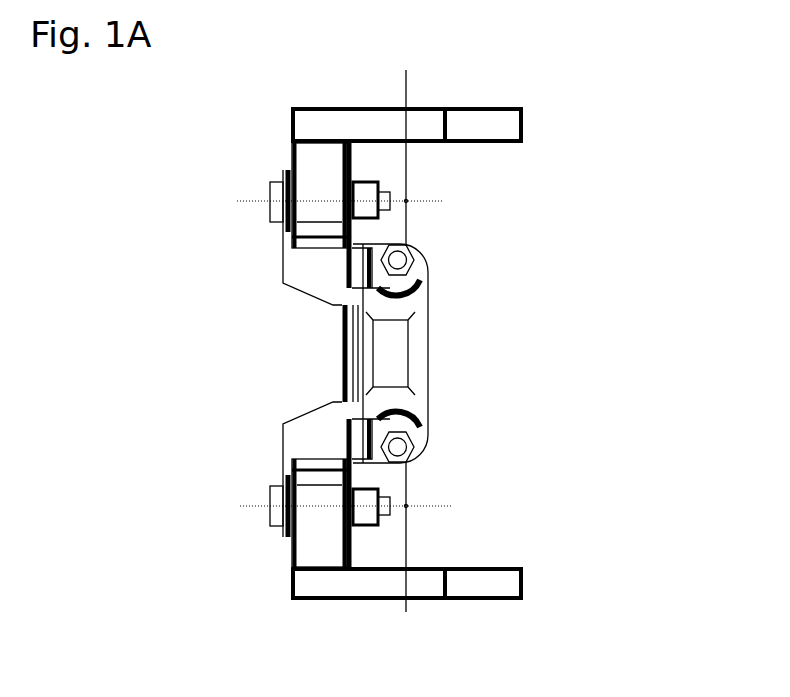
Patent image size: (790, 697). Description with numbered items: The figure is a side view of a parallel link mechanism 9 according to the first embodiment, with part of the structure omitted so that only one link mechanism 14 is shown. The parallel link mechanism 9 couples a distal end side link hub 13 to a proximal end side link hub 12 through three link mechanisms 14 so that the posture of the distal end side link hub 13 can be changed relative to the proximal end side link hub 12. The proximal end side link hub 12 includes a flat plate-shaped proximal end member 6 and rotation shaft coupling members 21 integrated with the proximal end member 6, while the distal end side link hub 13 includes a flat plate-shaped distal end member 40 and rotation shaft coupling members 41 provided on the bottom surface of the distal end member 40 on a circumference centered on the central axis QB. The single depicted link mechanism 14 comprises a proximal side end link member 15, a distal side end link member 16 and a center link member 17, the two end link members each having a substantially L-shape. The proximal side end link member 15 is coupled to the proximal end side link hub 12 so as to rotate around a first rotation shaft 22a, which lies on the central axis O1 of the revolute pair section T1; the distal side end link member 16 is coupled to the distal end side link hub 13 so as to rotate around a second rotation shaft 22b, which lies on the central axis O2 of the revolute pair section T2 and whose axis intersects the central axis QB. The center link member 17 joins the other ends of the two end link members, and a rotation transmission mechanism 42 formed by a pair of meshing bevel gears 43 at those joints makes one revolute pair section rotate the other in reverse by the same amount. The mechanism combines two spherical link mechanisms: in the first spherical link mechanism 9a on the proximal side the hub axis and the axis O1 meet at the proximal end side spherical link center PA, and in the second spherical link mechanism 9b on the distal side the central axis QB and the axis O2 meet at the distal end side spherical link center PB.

The parallel link mechanism 9 is at (520, 90).
The first spherical link mechanism 9a is at (508, 452).
The second spherical link mechanism 9b is at (505, 271).
The central axis of the distal end side link hub QB is at (407, 92).
The distal end side spherical link center PB is at (420, 198).
The proximal end side spherical link center PA is at (420, 510).
The central axis of the second rotation shaft O2 is at (407, 203).
The central axis of the first rotation shaft O1 is at (407, 503).
The distal end side link hub 13 is at (259, 136).
The rotation shaft coupling member 41 is at (313, 163).
The distal end member 40 is at (325, 128).
The proximal end side link hub 12 is at (356, 573).
The rotation shaft coupling member 21 is at (303, 550).
The proximal end member 6 is at (322, 585).
The distal side end link member 16 is at (297, 260).
The proximal side end link member 15 is at (297, 448).
The link mechanism 14 is at (383, 353).
The center link member 17 is at (430, 328).
The rotation transmission mechanism 42 is at (261, 354).
The bevel gear 43 is at (340, 320).
The revolute pair section T2 is at (216, 201).
The revolute pair section T1 is at (216, 506).
The second rotation shaft 22b is at (412, 190).
The first rotation shaft 22a is at (383, 522).